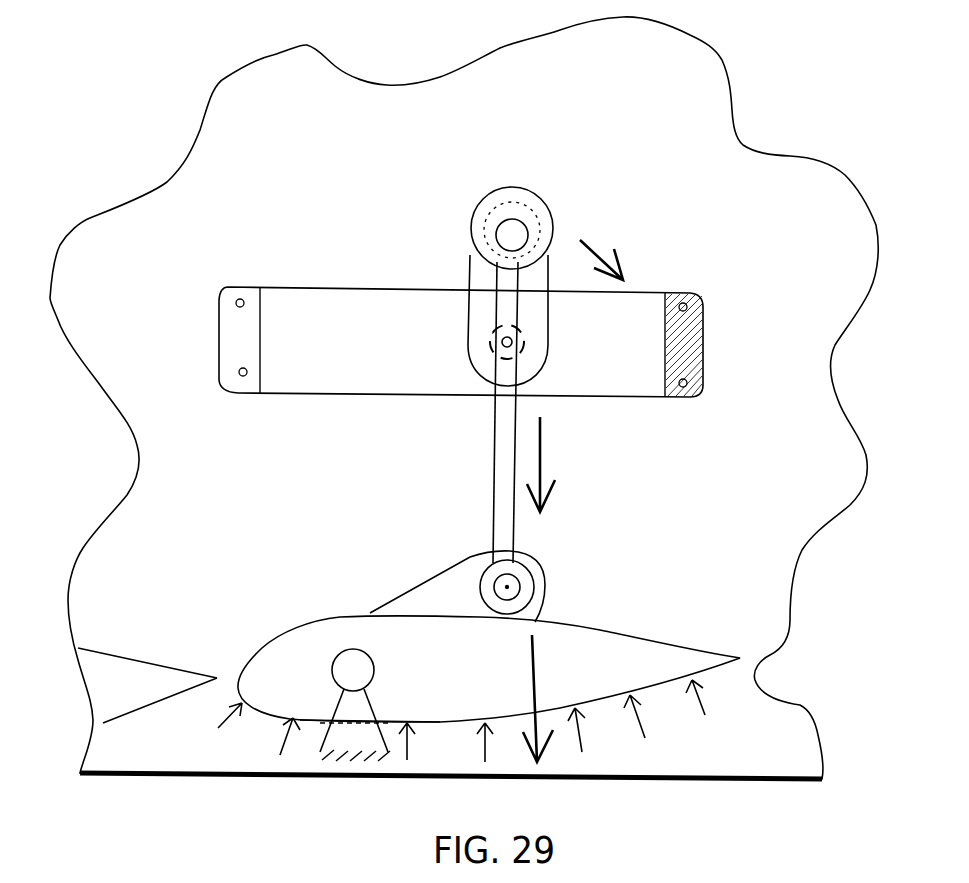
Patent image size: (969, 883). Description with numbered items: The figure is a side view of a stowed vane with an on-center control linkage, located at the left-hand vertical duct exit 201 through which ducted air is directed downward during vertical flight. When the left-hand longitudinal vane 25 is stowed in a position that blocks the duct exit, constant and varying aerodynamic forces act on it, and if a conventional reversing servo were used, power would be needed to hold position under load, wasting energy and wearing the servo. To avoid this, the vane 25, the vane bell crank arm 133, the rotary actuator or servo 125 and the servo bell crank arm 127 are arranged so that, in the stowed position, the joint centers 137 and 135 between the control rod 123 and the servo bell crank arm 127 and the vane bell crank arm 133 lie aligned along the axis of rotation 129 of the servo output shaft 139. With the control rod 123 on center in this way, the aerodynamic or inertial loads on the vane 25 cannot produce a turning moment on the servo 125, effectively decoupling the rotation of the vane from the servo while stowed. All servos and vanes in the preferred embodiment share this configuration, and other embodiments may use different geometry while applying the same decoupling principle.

The left-hand vertical duct exit 201 is at (142, 480).
The left-hand longitudinal vane 25 is at (293, 653).
The control rod 123 is at (497, 478).
The rotary actuator or servo 125 is at (232, 352).
The servo bell crank arm 127 is at (490, 282).
The axis of rotation 129 is at (500, 342).
The vane bell crank arm 133 is at (430, 598).
The joint center 135 is at (507, 589).
The joint center 137 is at (515, 237).
The servo output shaft 139 is at (520, 346).